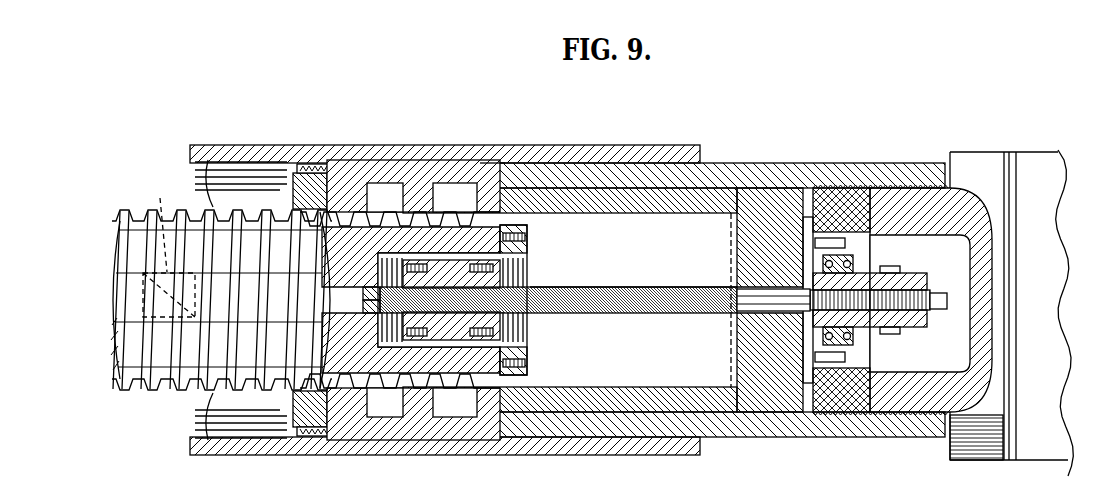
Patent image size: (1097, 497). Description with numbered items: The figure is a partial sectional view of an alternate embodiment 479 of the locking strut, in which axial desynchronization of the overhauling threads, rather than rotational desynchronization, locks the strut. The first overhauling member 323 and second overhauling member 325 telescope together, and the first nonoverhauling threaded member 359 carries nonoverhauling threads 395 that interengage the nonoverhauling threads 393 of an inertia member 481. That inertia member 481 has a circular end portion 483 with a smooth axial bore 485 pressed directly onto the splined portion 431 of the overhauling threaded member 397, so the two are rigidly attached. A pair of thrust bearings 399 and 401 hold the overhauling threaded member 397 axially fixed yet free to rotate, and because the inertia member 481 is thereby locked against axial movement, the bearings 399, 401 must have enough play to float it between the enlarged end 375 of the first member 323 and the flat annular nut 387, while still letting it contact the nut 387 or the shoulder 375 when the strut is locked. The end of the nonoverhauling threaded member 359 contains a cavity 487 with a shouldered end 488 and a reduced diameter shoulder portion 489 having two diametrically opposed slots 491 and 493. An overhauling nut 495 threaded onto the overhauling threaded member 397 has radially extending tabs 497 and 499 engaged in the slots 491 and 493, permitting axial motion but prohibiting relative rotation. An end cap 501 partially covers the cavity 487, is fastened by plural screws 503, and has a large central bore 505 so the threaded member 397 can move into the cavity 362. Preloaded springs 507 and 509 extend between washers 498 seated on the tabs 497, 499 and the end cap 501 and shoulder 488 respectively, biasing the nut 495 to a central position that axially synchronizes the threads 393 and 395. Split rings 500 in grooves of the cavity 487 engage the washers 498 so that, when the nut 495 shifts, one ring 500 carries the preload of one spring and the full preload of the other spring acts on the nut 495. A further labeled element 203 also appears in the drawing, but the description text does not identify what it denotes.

The retainer strip 203 is at (528, 360).
The first telescoping member 323 is at (727, 163).
The second telescoping member 325 is at (273, 144).
The first nonoverhauling threaded member 359 is at (180, 386).
The cavity 362 is at (221, 284).
The enlarged end 375 is at (365, 145).
The flat annular nut 387 is at (830, 188).
The nonoverhauling threads 393 is at (412, 255).
The nonoverhauling threads 395 is at (366, 300).
The overhauling threaded member 397 is at (640, 314).
The thrust bearing 399 is at (857, 267).
The thrust bearing 401 is at (857, 350).
The splined portion 431 is at (737, 275).
The alternate embodiment 479 is at (492, 132).
The inertia member 481 is at (565, 163).
The circular end portion 483 is at (742, 243).
The smooth axial bore 485 is at (753, 313).
The cavity 487 is at (368, 345).
The shouldered end 488 is at (363, 289).
The reduced diameter shoulder portion 489 is at (397, 338).
The slot 491 is at (386, 262).
The slot 493 is at (528, 345).
The overhauling nut 495 is at (574, 285).
The radially extending tab 497 is at (480, 260).
The washers 498 is at (445, 262).
The radially extending tab 499 is at (518, 375).
The split rings 500 is at (449, 338).
The end cap 501 is at (528, 258).
The screws 503 is at (528, 240).
The large central bore 505 is at (526, 277).
The preloaded spring 507 is at (526, 322).
The preloaded spring 509 is at (363, 312).